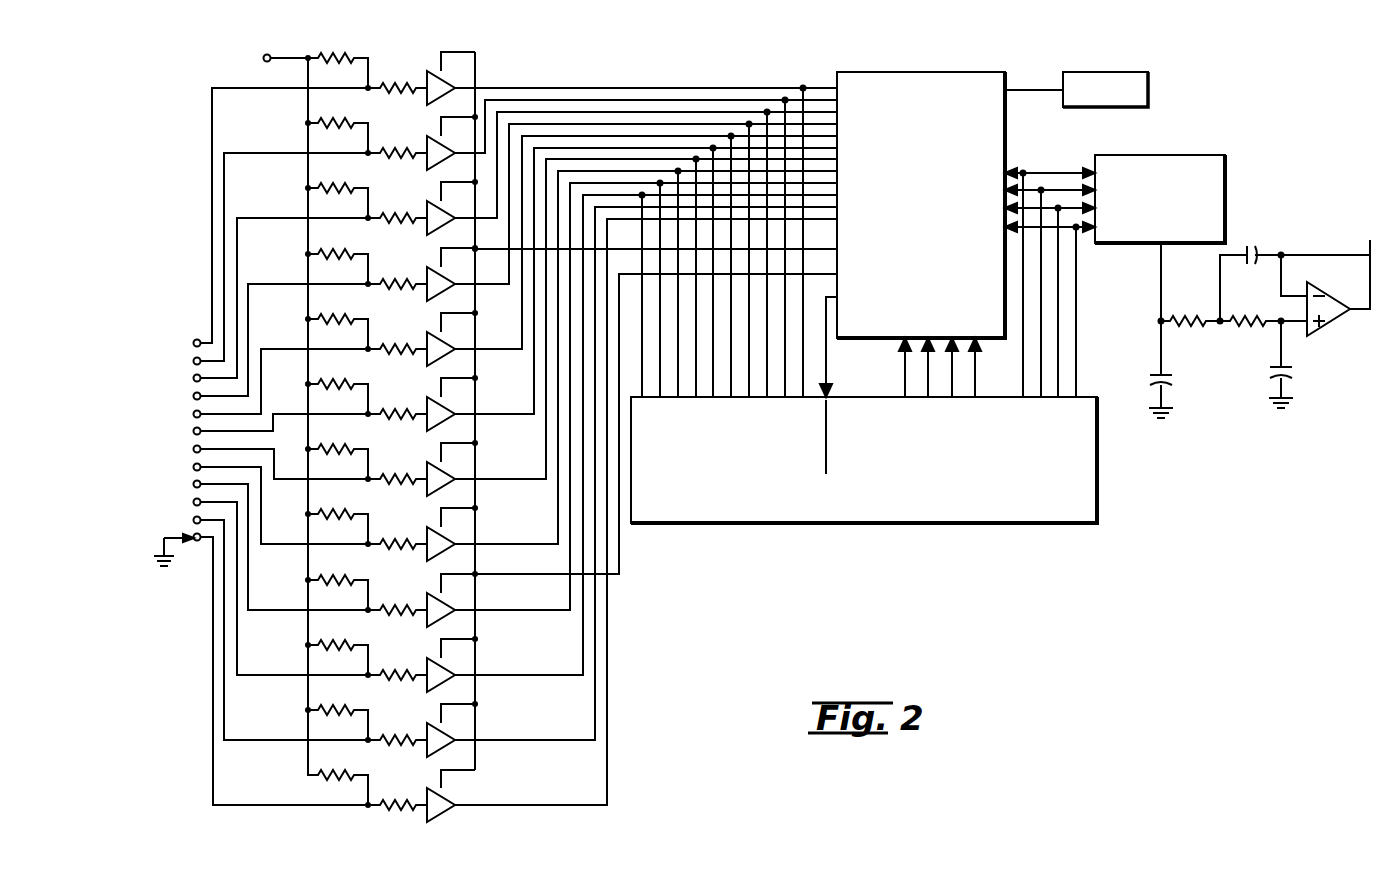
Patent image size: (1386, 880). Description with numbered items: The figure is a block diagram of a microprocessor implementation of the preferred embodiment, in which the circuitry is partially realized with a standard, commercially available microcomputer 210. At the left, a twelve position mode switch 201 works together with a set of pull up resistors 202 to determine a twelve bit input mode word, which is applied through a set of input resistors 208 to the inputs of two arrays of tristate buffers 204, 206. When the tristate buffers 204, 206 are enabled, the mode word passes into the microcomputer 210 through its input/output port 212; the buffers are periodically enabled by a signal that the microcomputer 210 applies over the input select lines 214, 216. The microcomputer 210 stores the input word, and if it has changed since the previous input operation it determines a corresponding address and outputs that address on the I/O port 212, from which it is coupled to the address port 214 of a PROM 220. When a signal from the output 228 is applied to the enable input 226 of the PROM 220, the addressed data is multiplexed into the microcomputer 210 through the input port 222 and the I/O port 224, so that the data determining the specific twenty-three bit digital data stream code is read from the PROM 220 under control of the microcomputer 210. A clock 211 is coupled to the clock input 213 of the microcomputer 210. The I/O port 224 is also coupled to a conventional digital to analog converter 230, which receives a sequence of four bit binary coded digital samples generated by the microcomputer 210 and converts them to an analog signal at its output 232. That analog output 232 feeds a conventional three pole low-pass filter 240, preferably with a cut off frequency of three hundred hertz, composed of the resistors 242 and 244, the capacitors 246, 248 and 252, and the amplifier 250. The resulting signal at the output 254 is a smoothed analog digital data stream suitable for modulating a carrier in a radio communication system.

The mode switch 201 is at (186, 524).
The pull up resistors 202 is at (338, 125).
The tristate buffers 204 is at (427, 73).
The tristate buffers 206 is at (432, 596).
The input resistors 208 is at (399, 276).
The microcomputer 210 is at (937, 72).
The clock 211 is at (1151, 100).
The input/output port 212 is at (851, 86).
The clock input 213 is at (1008, 93).
The input select line 214 is at (844, 249).
The input select line 216 is at (843, 274).
The PROM 220 is at (1102, 492).
The input port 222 is at (985, 333).
The I/O port 224 is at (1000, 166).
The enable input 226 is at (835, 385).
The output 228 is at (843, 297).
The digital to analog converter 230 is at (1171, 155).
The output 232 is at (1151, 251).
The low-pass filter 240 is at (1353, 415).
The resistor 242 is at (1187, 316).
The resistor 244 is at (1247, 316).
The capacitor 246 is at (1173, 382).
The capacitor 248 is at (1293, 376).
The amplifier 250 is at (1326, 289).
The capacitor 252 is at (1252, 244).
The output 254 is at (1370, 241).